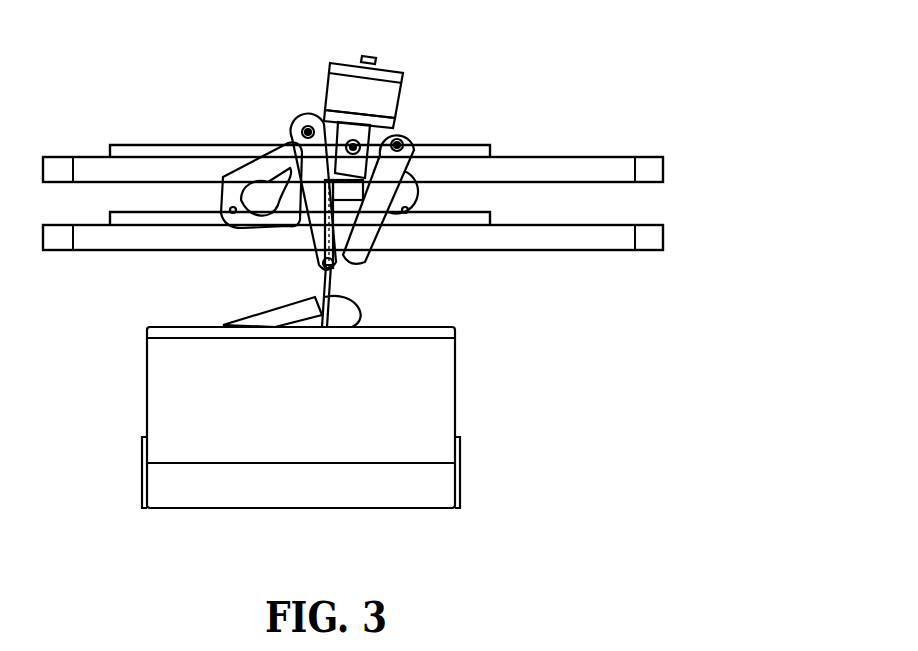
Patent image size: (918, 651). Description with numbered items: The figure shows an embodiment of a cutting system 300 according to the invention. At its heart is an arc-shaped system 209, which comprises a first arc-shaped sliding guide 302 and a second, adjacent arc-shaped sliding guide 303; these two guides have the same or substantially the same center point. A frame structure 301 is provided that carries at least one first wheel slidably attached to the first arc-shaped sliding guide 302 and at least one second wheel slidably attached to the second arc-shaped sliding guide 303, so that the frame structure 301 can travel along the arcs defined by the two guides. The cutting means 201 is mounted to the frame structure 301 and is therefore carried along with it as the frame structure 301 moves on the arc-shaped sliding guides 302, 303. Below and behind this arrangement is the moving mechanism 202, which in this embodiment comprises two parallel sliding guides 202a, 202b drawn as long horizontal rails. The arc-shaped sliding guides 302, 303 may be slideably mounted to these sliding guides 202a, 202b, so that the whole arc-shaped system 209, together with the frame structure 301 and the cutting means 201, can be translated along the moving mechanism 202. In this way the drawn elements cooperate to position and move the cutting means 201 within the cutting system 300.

The cutting means 201 is at (250, 162).
The moving mechanism 202 is at (404, 184).
The sliding guide 202a is at (512, 167).
The sliding guide 202b is at (553, 240).
The arc-shaped system 209 is at (196, 196).
The cutting system 300 is at (415, 141).
The frame structure 301 is at (417, 130).
The first arc-shaped sliding guide 302 is at (222, 178).
The second arc-shaped sliding guide 303 is at (300, 239).